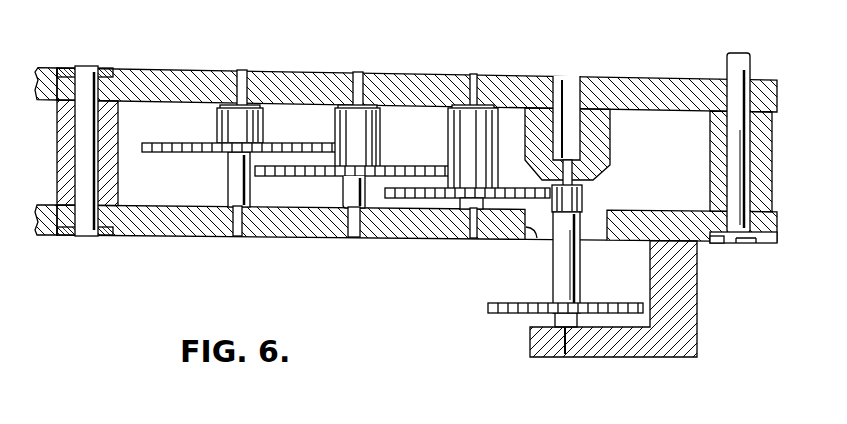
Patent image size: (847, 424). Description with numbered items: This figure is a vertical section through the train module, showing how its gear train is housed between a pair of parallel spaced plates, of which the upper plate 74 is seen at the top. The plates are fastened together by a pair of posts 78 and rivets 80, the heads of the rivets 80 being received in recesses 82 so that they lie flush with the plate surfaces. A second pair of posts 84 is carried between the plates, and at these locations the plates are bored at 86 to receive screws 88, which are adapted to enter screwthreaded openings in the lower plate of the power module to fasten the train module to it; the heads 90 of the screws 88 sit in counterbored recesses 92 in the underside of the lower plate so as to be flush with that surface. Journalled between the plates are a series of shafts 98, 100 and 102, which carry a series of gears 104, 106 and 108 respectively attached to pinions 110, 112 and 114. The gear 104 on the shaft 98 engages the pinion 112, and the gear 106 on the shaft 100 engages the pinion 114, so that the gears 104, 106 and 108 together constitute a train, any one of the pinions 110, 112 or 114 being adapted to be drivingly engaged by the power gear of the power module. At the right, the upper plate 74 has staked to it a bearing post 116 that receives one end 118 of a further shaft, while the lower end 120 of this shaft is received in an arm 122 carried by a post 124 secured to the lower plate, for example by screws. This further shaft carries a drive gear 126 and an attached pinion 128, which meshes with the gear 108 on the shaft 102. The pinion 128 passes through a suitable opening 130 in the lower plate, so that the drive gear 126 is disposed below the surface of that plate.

The upper plate 74 is at (673, 77).
The posts 78 is at (119, 131).
The rivets 80 is at (86, 67).
The recesses 82 is at (106, 69).
The second pair of posts 84 is at (772, 140).
The bores 86 is at (748, 92).
The screws 88 is at (733, 157).
The heads of the screws 90 is at (751, 244).
The counterbored recesses 92 is at (714, 244).
The shaft 98 is at (228, 184).
The shaft 100 is at (342, 182).
The shaft 102 is at (458, 206).
The gear 104 is at (198, 154).
The gear 106 is at (310, 177).
The gear 108 is at (511, 160).
The pinion 110 is at (257, 124).
The pinion 112 is at (368, 134).
The pinion 114 is at (467, 140).
The bearing post 116 is at (596, 128).
The end of further shaft 118 is at (574, 176).
The lower end of shaft 120 is at (552, 343).
The arm 122 is at (626, 352).
The post 124 is at (698, 296).
The drive gear 126 is at (524, 314).
The pinion 128 is at (562, 259).
The opening 130 is at (537, 233).